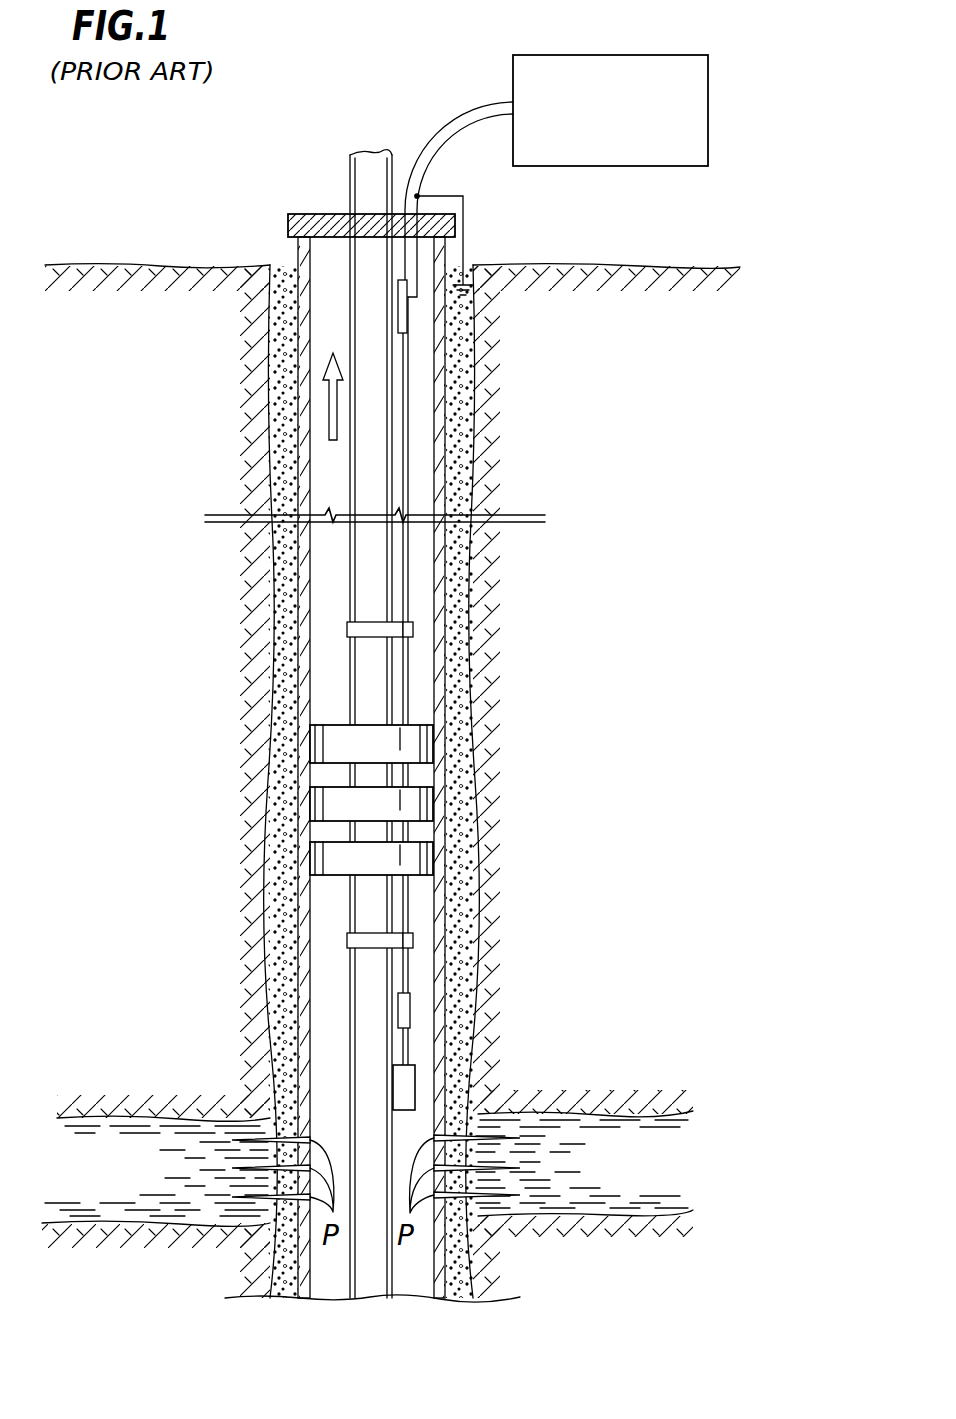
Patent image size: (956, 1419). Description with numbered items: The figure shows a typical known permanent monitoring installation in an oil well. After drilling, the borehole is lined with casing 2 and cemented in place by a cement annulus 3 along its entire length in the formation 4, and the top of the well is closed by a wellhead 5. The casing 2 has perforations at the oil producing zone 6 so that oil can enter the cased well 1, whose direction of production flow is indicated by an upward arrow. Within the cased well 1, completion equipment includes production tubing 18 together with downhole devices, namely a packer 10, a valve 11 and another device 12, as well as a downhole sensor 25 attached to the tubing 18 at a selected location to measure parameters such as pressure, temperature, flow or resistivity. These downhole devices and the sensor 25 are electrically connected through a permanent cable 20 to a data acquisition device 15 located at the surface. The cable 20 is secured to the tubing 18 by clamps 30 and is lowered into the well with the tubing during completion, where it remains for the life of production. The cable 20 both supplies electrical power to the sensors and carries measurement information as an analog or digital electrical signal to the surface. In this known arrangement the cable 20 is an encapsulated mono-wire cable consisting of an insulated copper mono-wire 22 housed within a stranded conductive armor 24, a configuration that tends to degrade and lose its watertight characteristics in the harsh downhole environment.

The cased well 1 is at (305, 400).
The casing 2 is at (440, 922).
The cement annulus 3 is at (283, 800).
The formation 4 is at (262, 705).
The wellhead 5 is at (288, 228).
The oil producing zone 6 is at (121, 1183).
The packer 10 is at (425, 740).
The valve 11 is at (425, 800).
The other device 12 is at (425, 858).
The data acquisition device 15 is at (636, 167).
The production tubing 18 is at (347, 154).
The permanent cable 20 is at (416, 1012).
The insulated copper mono-wire 22 is at (450, 118).
The stranded armor 24 is at (408, 672).
The downhole sensor 25 is at (430, 1095).
The clamps 30 is at (412, 628).